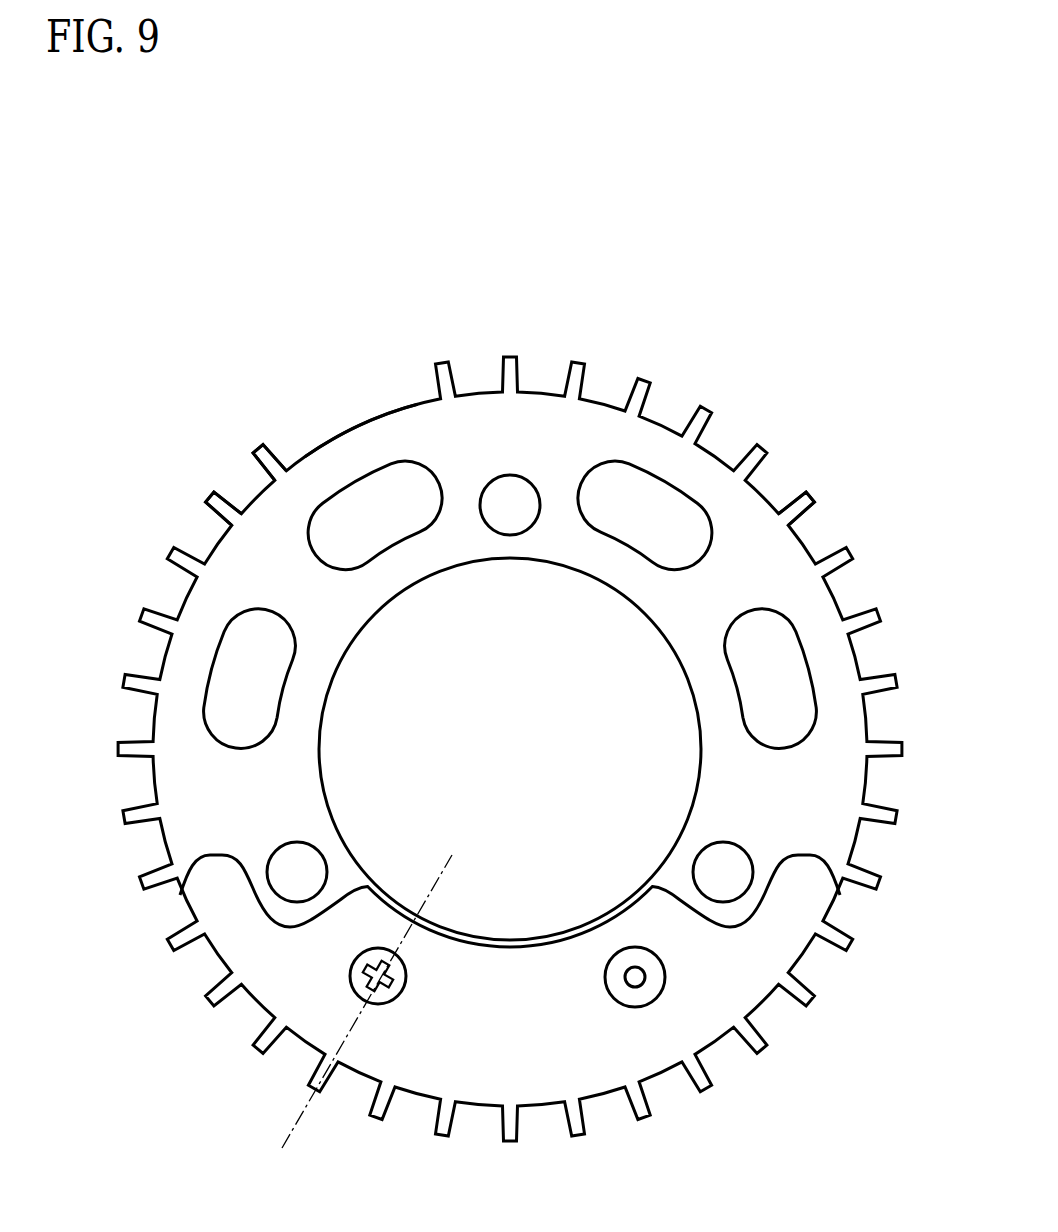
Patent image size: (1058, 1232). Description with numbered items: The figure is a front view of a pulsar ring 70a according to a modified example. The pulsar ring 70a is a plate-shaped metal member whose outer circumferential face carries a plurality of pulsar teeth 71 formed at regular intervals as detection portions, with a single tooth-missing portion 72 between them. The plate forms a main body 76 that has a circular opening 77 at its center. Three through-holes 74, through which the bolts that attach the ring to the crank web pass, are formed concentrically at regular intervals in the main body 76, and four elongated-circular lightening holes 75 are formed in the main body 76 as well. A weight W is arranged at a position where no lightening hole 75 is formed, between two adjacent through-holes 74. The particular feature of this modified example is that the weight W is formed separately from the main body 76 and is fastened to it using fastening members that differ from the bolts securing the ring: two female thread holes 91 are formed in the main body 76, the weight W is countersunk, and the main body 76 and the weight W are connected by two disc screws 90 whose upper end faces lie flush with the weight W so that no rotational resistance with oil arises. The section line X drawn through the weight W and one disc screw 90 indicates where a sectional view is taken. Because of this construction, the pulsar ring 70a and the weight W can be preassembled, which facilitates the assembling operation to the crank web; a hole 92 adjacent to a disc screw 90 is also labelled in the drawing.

The pulsar ring 70a is at (655, 258).
The pulsar teeth 71 is at (262, 457).
The tooth-missing portion 72 is at (359, 418).
The through-holes 74 is at (511, 500).
The lightening holes 75 is at (350, 525).
The main body 76 is at (750, 512).
The circular opening 77 is at (521, 918).
The disc screws 90 is at (353, 971).
The female thread holes 91 is at (633, 987).
The hole 92 is at (651, 992).
The weight W is at (417, 1023).
The line X- X is at (458, 862).